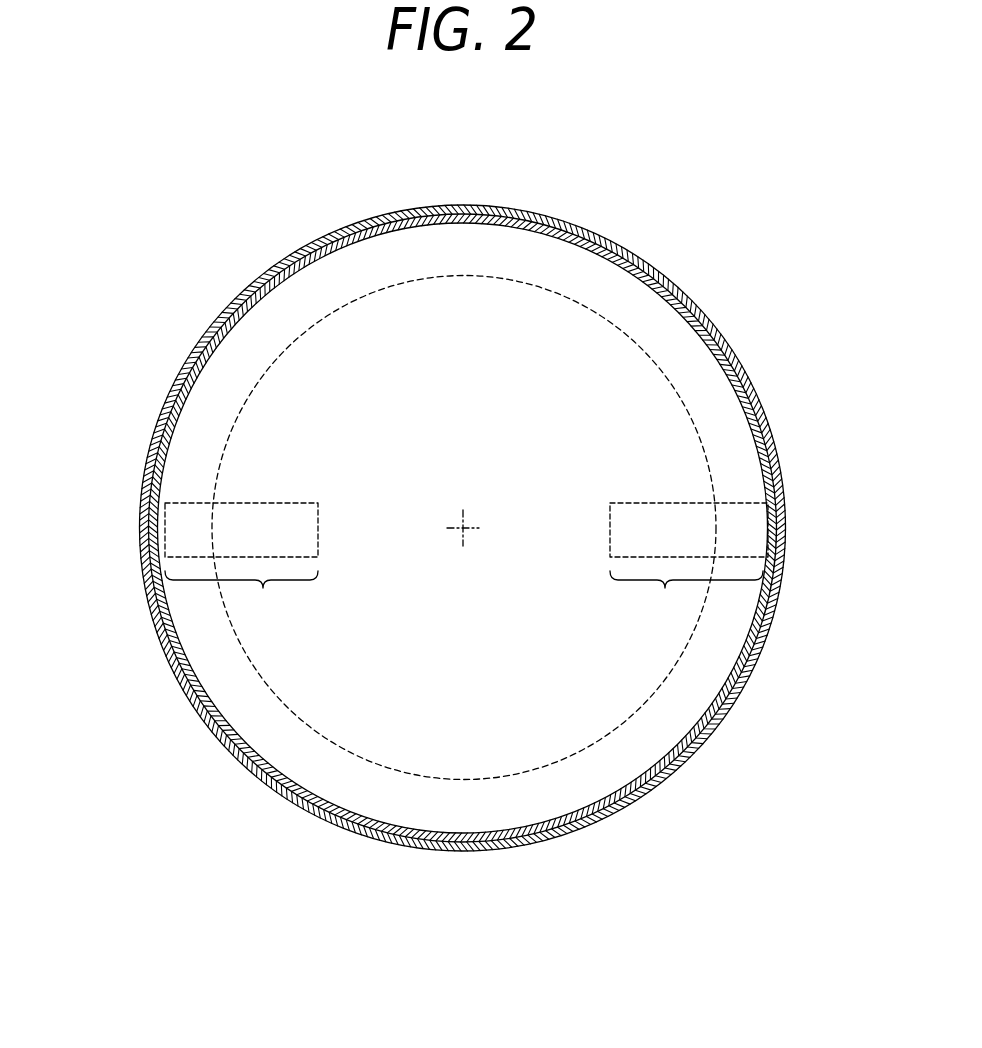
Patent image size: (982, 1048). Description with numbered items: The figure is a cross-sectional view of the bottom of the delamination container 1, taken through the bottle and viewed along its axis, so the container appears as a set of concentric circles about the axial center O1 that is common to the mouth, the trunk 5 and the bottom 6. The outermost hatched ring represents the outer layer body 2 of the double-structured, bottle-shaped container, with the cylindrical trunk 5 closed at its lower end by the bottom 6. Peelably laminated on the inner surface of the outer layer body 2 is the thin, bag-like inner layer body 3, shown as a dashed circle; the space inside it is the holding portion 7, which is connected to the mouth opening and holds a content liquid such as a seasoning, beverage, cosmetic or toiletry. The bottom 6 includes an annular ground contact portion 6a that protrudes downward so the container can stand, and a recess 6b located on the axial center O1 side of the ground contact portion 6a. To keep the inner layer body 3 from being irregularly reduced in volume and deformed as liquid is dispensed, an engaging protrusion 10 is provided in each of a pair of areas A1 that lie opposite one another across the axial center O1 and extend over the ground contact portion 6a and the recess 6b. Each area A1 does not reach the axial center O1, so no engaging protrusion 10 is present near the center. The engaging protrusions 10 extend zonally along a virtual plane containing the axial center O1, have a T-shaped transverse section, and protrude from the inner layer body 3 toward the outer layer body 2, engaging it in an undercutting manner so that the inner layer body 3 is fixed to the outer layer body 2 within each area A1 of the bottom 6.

The delamination container 1 is at (473, 500).
The outer layer body 2 is at (710, 320).
The inner layer body 3 is at (680, 310).
The trunk 5 is at (750, 376).
The bottom 6 is at (575, 252).
The ground contact portion 6a is at (497, 245).
The recess 6b is at (370, 340).
The holding portion 7 is at (475, 656).
The engaging protrusion 10 is at (130, 528).
The area A1 is at (464, 596).
The axial center O1 is at (470, 522).